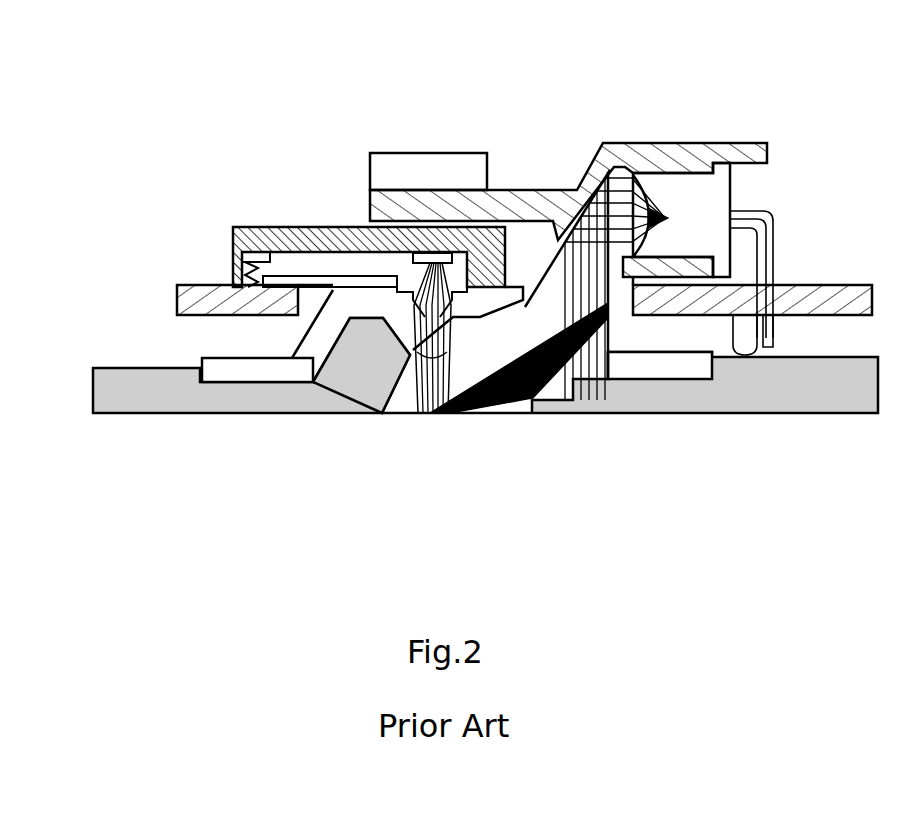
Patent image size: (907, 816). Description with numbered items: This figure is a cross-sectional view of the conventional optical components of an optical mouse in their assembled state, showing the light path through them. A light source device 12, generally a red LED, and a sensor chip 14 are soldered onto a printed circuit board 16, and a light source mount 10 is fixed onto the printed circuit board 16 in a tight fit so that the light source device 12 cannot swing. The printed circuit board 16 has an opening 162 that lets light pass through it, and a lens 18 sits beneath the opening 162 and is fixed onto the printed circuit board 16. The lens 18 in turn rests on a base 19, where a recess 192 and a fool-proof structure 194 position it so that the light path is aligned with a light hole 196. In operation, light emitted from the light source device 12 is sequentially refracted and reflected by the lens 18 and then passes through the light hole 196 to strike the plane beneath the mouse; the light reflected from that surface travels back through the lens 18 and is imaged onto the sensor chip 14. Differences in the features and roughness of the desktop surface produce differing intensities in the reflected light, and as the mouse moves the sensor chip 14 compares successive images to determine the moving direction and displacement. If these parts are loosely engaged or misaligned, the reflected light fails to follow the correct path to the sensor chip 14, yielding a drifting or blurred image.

The light source mount 10 is at (520, 184).
The light source device 12 is at (740, 200).
The sensor chip 14 is at (298, 225).
The printed circuit board 16 is at (180, 282).
The opening 162 is at (312, 296).
The lens 18 is at (203, 355).
The base 19 is at (193, 419).
The recess 192 is at (657, 382).
The fool-proof structure 194 is at (362, 382).
The light hole 196 is at (506, 424).